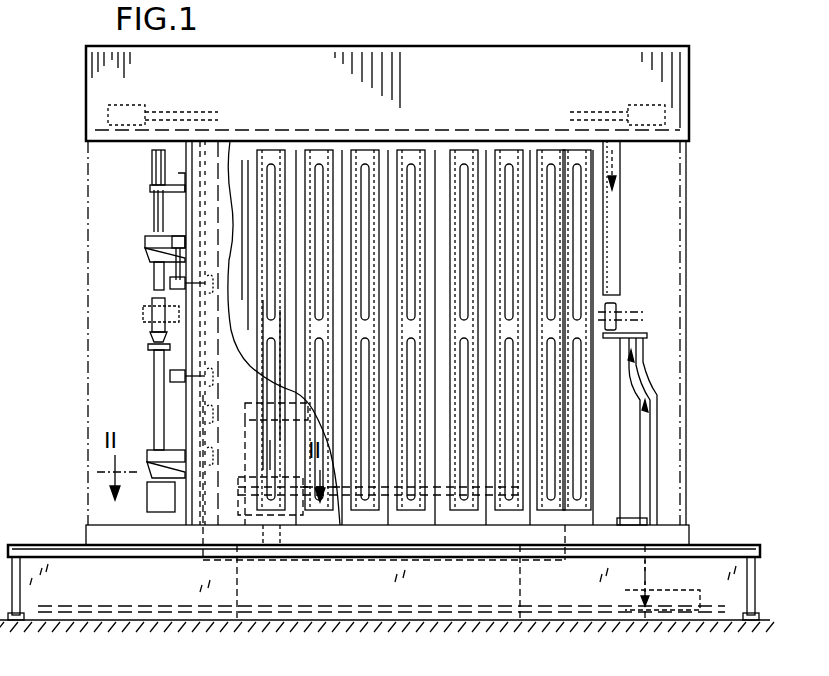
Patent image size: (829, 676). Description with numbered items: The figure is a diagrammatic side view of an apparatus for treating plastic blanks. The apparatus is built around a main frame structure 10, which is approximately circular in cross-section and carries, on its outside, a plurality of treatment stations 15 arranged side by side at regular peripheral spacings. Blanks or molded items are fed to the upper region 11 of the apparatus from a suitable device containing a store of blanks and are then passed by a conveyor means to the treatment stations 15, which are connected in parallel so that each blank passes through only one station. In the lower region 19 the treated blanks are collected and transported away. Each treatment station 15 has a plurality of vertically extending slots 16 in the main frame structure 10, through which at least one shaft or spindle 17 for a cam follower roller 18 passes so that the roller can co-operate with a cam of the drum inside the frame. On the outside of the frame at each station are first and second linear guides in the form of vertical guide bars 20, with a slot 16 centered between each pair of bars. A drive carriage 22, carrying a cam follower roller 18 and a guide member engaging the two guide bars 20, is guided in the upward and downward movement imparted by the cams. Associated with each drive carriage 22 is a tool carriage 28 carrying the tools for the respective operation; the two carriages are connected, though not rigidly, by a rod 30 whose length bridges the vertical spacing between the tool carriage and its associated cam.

The main frame structure 10 is at (440, 165).
The upper region 11 is at (112, 124).
The treatment station 15 is at (138, 309).
The slot 16 is at (420, 165).
The shaft or spindle 17 is at (195, 190).
The cam follower roller 18 is at (212, 440).
The lower region 19 is at (103, 595).
The guide bar 20 is at (297, 155).
The drive carriage 22 is at (185, 281).
The tool carriage 28 is at (165, 230).
The rod 30 is at (176, 270).